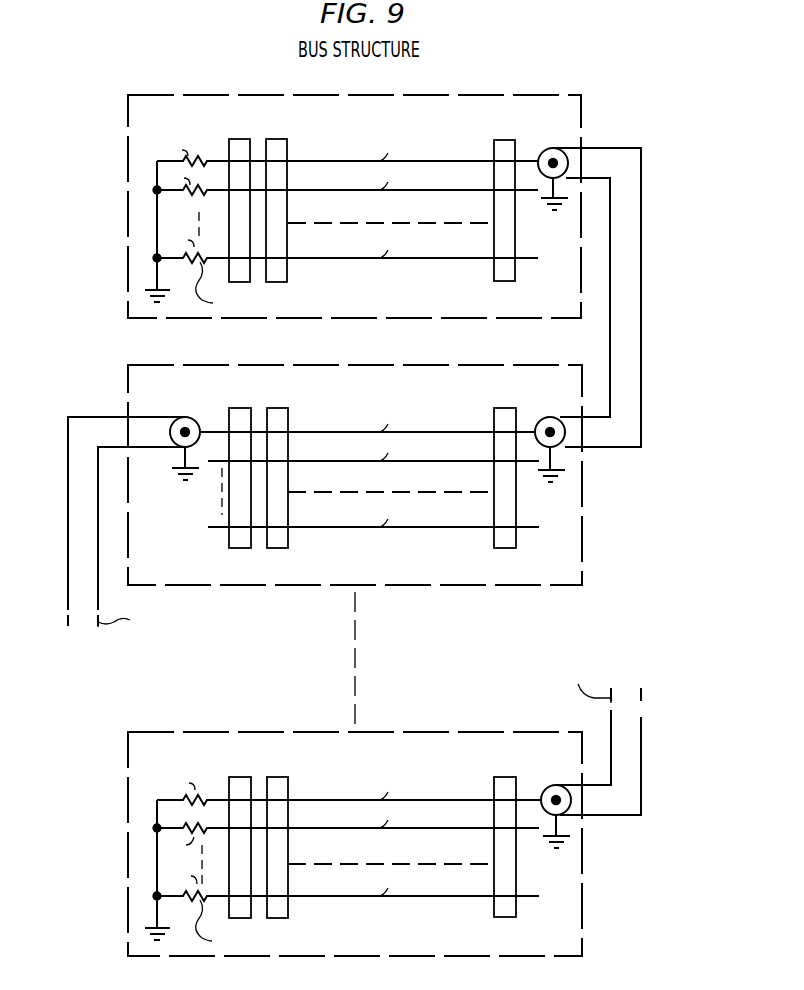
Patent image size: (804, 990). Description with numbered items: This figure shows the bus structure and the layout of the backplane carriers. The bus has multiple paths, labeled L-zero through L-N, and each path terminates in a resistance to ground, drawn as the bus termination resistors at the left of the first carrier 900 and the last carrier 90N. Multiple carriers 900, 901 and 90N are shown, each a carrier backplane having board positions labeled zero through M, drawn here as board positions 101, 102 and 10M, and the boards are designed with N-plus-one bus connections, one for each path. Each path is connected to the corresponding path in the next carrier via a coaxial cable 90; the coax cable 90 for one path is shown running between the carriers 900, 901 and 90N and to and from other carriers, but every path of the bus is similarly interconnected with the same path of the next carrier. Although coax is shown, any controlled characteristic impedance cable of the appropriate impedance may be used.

The carrier 900 is at (547, 95).
The carrier 901 is at (543, 364).
The carrier 90N is at (548, 732).
The coaxial cable 90 is at (645, 347).
The card slot 0 101 is at (240, 139).
The card slot 1 102 is at (277, 139).
The card slot M 10M is at (504, 140).